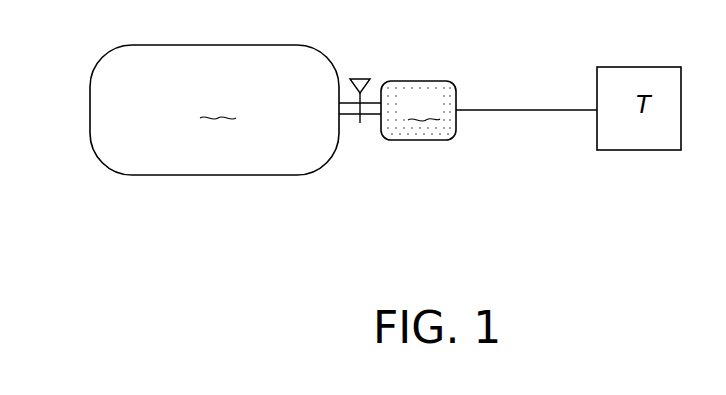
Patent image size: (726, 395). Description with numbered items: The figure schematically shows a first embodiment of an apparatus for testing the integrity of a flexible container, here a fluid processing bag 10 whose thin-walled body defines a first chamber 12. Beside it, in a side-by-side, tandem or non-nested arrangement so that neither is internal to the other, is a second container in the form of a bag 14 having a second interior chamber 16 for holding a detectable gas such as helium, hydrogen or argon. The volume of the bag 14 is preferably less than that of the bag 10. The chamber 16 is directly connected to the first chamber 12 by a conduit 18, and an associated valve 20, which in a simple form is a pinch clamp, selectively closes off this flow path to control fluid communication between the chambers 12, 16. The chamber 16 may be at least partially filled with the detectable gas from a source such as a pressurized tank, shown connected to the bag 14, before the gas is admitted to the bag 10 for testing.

The fluid processing bag 10 is at (180, 176).
The first chamber 12 is at (219, 105).
The bag 14 is at (442, 140).
The second interior chamber 16 is at (423, 105).
The conduit 18 is at (376, 117).
The valve 20 is at (360, 78).